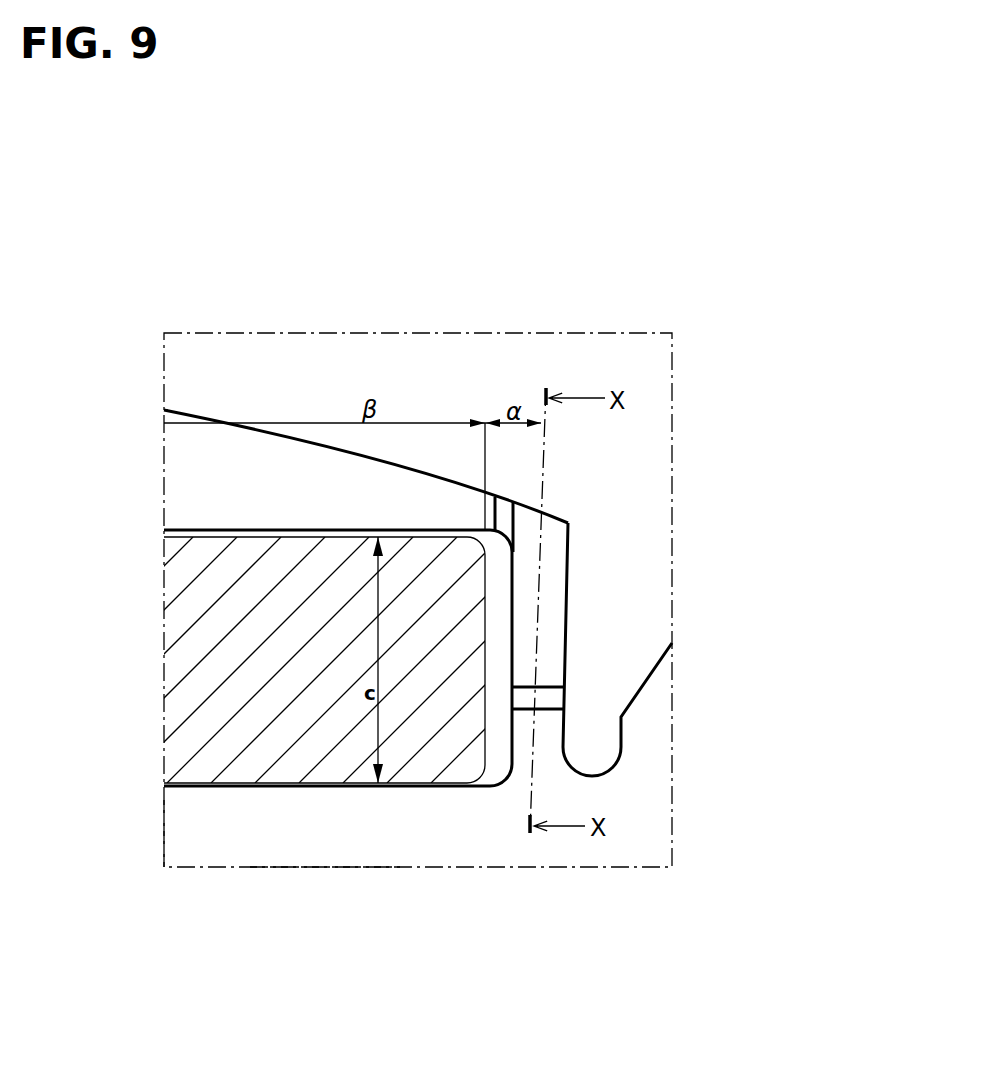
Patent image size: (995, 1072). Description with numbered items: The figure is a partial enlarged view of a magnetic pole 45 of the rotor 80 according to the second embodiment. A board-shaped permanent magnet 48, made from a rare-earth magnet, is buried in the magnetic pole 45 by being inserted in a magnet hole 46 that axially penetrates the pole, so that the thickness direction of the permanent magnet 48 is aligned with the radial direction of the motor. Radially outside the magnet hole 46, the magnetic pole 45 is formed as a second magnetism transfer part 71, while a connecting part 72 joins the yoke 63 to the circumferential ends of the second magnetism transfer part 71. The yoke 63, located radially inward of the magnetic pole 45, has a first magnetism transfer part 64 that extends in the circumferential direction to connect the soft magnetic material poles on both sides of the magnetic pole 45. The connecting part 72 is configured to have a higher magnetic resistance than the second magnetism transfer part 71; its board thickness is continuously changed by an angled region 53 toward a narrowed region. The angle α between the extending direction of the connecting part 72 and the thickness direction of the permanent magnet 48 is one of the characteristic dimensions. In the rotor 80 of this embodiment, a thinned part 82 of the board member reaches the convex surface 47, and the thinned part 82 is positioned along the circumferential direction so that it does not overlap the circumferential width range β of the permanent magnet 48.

The magnetic pole 45 is at (203, 398).
The magnet hole 46 is at (212, 540).
The convex surface 47 is at (183, 408).
The permanent magnet 48 is at (190, 700).
The angled region 53 is at (505, 519).
The yoke 63 is at (160, 839).
The first magnetism transfer part 64 is at (308, 848).
The second magnetism transfer part 71 is at (327, 395).
The connecting part 72 is at (651, 649).
The rotor 80 is at (597, 478).
The thinned part 82 is at (556, 601).